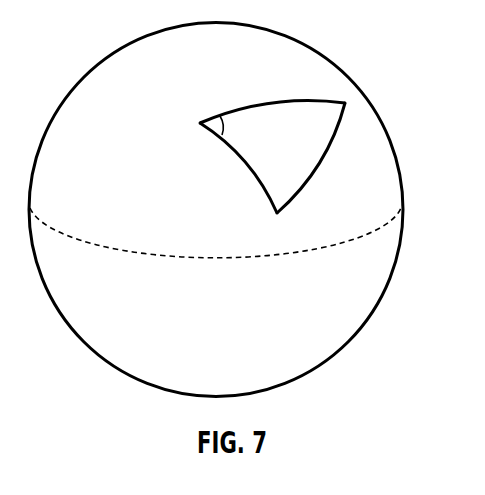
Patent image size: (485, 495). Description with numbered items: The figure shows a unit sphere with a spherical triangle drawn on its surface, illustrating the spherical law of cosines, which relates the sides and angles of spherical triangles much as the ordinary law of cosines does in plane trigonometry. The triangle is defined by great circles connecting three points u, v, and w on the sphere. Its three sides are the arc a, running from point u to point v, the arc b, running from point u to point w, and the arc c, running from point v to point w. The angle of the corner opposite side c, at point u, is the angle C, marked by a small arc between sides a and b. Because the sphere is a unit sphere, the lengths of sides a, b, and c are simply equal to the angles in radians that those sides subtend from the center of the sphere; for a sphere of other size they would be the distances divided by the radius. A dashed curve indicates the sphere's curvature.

The point u is at (188, 127).
The point v is at (274, 230).
The point w is at (357, 116).
The side a is at (238, 168).
The side b is at (272, 97).
The side c is at (311, 158).
The angle C is at (236, 129).